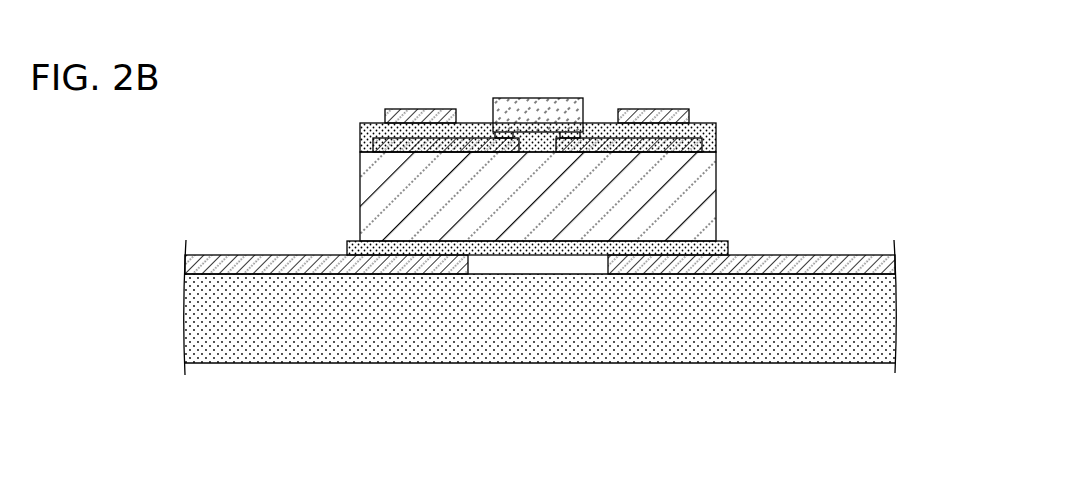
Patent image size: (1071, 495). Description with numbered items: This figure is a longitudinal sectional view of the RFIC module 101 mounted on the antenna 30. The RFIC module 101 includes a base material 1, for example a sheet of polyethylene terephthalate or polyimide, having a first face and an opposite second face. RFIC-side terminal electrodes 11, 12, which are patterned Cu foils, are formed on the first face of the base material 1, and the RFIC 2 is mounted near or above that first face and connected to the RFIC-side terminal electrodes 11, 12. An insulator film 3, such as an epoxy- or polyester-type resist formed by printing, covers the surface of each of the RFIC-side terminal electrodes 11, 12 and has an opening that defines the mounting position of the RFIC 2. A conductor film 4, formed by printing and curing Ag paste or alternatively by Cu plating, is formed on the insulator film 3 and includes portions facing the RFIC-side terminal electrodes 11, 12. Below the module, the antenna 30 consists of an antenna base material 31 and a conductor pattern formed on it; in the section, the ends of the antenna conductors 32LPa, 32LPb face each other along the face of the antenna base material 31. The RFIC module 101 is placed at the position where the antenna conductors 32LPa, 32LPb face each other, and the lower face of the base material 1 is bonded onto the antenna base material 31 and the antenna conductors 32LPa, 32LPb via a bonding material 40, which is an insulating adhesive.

The base material 1 is at (706, 193).
The RFIC 2 is at (535, 103).
The insulator film 3 is at (707, 133).
The conductor film 4 is at (638, 110).
The RFIC-side terminal electrode 11 is at (402, 140).
The RFIC-side terminal electrode 12 is at (672, 143).
The antenna 30 is at (544, 324).
The antenna base material 31 is at (532, 350).
The antenna conductor 32LPa is at (278, 255).
The antenna conductor 32LPb is at (813, 260).
The bonding material 40 is at (727, 248).
The RFIC module 101 is at (581, 137).